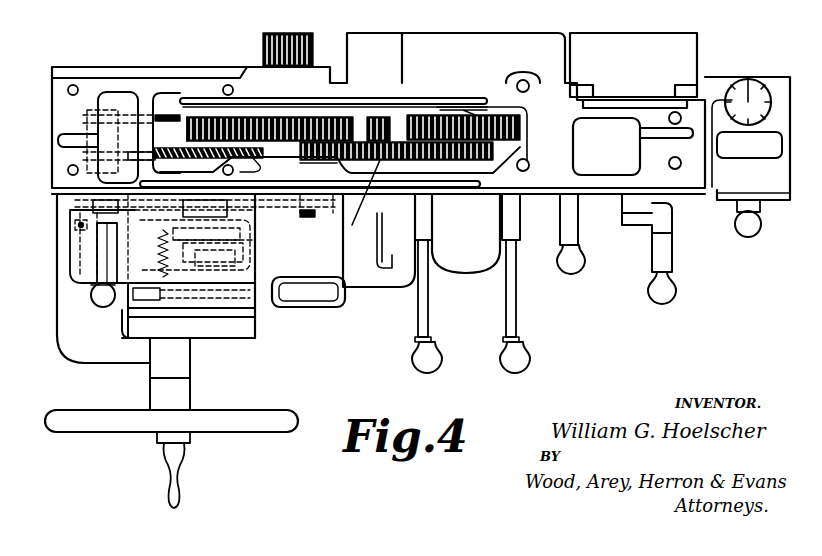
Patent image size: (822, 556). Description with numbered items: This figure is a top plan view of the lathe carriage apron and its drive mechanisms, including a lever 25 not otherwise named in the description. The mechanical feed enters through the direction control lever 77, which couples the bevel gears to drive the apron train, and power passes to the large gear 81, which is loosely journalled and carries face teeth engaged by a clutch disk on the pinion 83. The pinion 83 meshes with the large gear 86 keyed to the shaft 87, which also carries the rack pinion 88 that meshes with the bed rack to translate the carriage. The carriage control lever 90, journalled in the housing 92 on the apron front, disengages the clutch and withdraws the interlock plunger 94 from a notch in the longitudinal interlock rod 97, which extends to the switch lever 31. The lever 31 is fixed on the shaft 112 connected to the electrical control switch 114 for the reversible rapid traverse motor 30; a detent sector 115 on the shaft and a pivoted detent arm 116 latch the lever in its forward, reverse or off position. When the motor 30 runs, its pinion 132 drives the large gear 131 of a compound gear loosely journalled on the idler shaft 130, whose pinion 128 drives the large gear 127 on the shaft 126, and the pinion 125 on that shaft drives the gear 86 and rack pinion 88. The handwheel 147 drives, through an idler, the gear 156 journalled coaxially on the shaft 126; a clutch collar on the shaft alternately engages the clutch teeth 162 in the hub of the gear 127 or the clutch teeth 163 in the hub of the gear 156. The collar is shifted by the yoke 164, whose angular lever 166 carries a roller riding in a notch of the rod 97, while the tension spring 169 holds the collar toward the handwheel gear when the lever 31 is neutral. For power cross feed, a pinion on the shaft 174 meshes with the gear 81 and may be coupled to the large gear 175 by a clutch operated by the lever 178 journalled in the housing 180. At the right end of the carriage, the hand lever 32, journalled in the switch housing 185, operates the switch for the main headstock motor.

The lever 25 is at (668, 252).
The rapid traverse motor 30 is at (113, 352).
The lever 31 is at (110, 306).
The hand lever 32 is at (748, 234).
The direction control lever 77 is at (574, 258).
The large gear 81 is at (352, 225).
The pinion 83 is at (400, 115).
The large gear 86 is at (345, 115).
The shaft 87 is at (290, 152).
The pinion 88 is at (300, 33).
The carriage control lever 90 is at (429, 327).
The housing 92 is at (372, 285).
The interlock plunger 94 is at (389, 264).
The interlock rod 97 is at (316, 221).
The shaft 112 is at (90, 257).
The electrical control switch 114 is at (96, 142).
The detent sector 115 is at (75, 223).
The detent arm 116 is at (93, 247).
The pinion 125 is at (188, 99).
The shaft 126 is at (200, 116).
The large gear 127 is at (234, 170).
The pinion 128 is at (152, 146).
The idler shaft 130 is at (495, 228).
The large gear 131 is at (163, 114).
The pinion 132 is at (107, 115).
The handwheel 147 is at (226, 418).
The gear 156 is at (225, 283).
The clutch teeth 162 is at (245, 215).
The clutch teeth 163 is at (240, 258).
The yoke 164 is at (244, 250).
The angular lever 166 is at (250, 236).
The tension spring 169 is at (168, 278).
The shaft 174 is at (463, 110).
The large gear 175 is at (527, 110).
The lever 178 is at (516, 323).
The housing 180 is at (751, 77).
The switch housing 185 is at (726, 190).